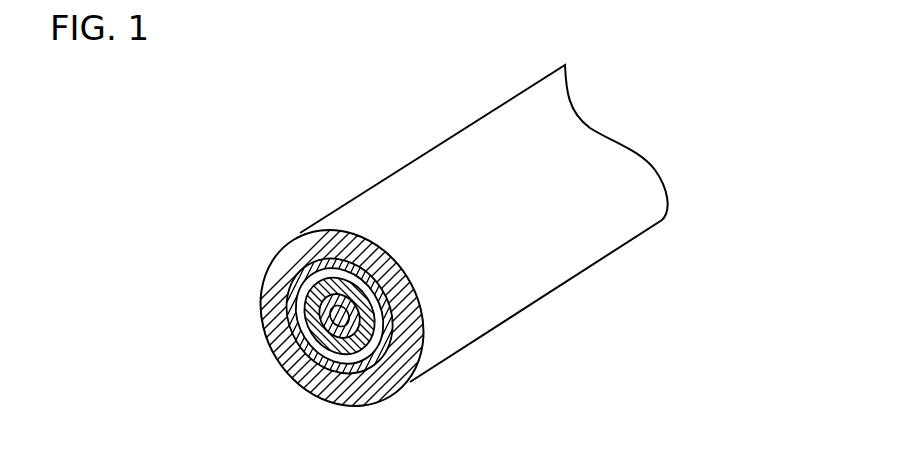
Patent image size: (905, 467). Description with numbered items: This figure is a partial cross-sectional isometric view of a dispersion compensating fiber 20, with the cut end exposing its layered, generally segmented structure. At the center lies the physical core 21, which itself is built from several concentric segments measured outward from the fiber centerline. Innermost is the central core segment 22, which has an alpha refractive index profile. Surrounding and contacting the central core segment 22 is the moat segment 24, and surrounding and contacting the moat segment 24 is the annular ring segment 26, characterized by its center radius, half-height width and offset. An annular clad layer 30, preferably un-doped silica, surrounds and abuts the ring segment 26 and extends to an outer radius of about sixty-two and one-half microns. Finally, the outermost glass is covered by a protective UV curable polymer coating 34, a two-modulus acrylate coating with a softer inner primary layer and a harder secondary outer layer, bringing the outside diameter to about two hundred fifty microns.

The dispersion compensating fiber 20 is at (392, 125).
The physical core 21 is at (291, 284).
The central core segment 22 is at (345, 332).
The moat segment 24 is at (300, 349).
The annular ring segment 26 is at (300, 350).
The clad layer 30 is at (338, 376).
The protective UV curable polymer coating 34 is at (333, 239).